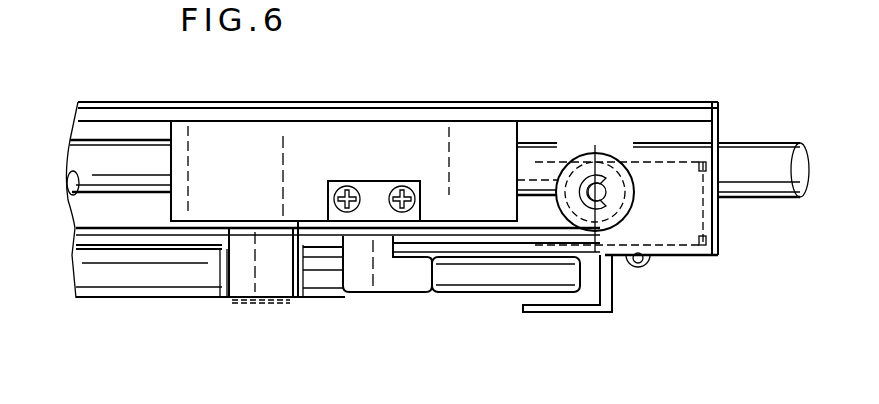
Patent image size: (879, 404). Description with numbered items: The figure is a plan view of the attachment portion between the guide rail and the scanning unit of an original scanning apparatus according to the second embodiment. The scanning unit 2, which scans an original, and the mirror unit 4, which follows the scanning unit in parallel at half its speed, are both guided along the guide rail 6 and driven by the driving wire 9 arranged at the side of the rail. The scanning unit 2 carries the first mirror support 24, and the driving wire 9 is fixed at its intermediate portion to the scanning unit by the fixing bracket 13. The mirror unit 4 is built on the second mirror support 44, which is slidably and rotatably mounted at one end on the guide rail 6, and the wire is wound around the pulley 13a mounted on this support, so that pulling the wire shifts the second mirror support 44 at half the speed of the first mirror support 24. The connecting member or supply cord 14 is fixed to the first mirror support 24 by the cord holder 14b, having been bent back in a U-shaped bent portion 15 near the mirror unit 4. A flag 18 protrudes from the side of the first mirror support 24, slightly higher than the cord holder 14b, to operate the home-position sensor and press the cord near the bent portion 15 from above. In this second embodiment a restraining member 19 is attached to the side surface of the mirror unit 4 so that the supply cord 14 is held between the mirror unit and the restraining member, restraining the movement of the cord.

The scanning unit 2 is at (271, 119).
The mirror unit 4 is at (708, 94).
The guide rail 6 is at (762, 180).
The driving wire 9 is at (148, 230).
The fixing bracket 13 is at (382, 190).
The pulley 13a is at (630, 197).
The supply cord 14 is at (328, 278).
The cord holder 14b is at (268, 283).
The bent portion 15 is at (557, 290).
The flag 18 is at (404, 280).
The restraining member 19 is at (612, 291).
The first mirror support 24 is at (210, 140).
The second mirror support 44 is at (608, 125).